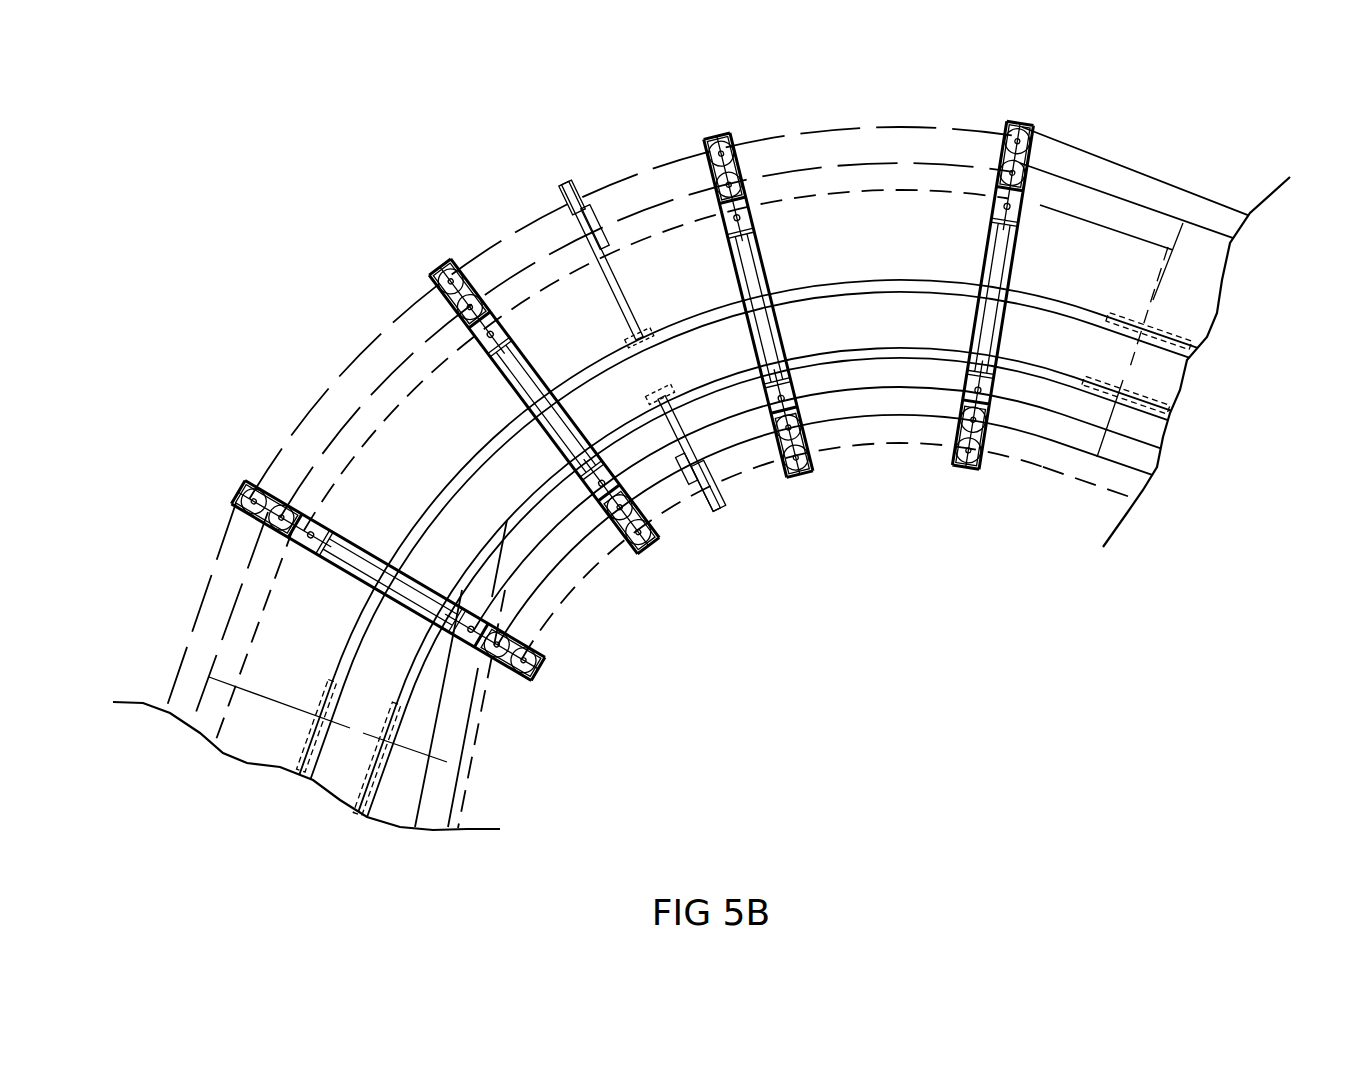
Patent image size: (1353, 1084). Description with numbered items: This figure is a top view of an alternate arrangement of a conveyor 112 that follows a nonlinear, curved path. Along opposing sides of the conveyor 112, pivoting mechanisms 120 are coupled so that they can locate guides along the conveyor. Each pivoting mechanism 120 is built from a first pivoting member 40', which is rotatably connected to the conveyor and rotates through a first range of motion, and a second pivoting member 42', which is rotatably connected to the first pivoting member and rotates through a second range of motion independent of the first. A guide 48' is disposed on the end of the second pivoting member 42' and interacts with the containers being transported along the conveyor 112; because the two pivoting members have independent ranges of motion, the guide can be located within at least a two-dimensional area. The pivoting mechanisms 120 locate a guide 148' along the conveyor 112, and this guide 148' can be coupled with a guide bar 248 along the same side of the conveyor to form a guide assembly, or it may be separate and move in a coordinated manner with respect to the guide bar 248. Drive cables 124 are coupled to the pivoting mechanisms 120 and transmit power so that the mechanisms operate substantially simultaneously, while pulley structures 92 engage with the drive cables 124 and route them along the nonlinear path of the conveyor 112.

The conveyor 112 is at (243, 124).
The pivoting mechanism 120 is at (603, 171).
The pulley structure 92 is at (727, 146).
The drive cable 124 is at (343, 381).
The guide 148' is at (748, 520).
The guide bar 248 is at (1212, 337).
The first pivoting member 40' is at (667, 325).
The second pivoting member 42' is at (598, 363).
The guide 48' is at (708, 366).